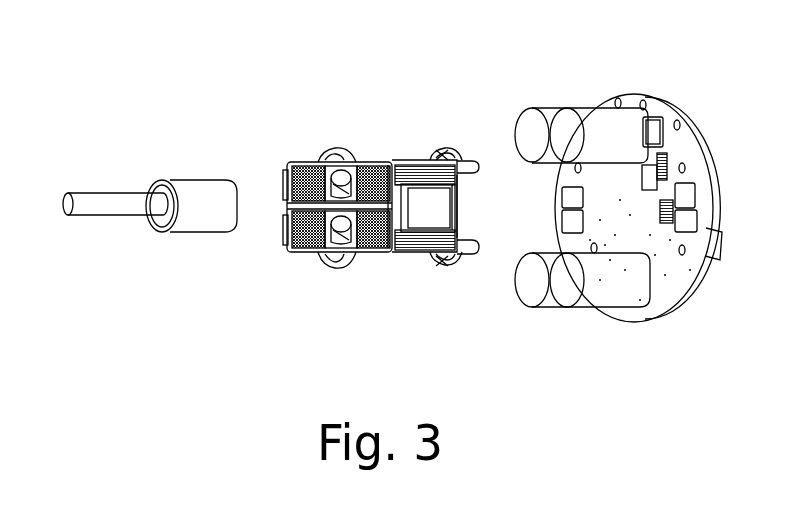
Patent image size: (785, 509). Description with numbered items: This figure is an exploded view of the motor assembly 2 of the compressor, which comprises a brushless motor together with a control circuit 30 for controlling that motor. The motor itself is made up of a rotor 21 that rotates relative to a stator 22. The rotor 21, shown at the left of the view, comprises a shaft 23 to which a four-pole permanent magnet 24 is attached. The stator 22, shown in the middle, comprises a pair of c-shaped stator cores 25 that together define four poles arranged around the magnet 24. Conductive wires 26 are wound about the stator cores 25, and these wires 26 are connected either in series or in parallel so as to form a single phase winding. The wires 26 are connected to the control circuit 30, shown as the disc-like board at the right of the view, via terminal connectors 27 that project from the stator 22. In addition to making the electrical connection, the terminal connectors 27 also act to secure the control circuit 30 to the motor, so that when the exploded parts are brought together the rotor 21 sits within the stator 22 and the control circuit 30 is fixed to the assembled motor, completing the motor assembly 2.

The motor assembly 2 is at (97, 70).
The rotor 21 is at (182, 178).
The stator 22 is at (380, 160).
The shaft 23 is at (112, 216).
The four-pole permanent magnet 24 is at (195, 233).
The c-shaped stator cores 25 is at (420, 218).
The conductive wires 26 is at (312, 251).
The terminal connectors 27 is at (473, 253).
The control circuit 30 is at (636, 95).